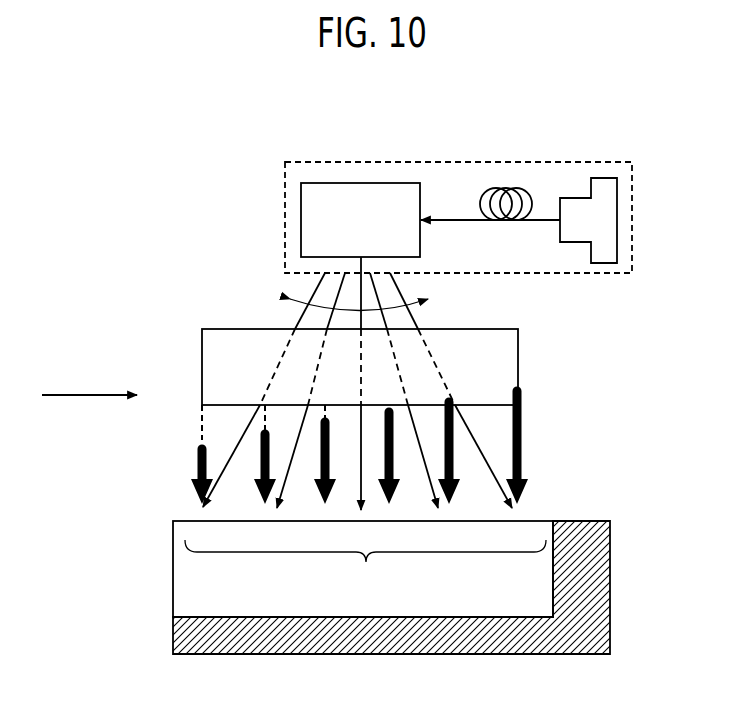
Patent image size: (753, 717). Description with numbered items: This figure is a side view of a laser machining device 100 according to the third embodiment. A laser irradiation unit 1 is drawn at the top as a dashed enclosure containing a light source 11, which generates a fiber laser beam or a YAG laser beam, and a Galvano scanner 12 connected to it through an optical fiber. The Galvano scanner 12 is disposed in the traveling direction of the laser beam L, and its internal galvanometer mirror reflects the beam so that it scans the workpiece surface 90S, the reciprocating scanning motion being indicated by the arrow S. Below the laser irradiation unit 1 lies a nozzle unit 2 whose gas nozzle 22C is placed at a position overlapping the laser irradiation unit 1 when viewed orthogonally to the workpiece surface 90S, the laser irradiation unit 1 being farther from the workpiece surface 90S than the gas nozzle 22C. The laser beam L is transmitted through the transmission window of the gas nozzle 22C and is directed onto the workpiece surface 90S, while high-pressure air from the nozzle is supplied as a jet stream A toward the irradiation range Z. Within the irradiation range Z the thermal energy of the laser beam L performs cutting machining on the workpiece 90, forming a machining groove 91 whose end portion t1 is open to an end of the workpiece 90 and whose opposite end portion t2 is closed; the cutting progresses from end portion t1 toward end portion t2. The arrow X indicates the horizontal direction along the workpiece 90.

The laser processing apparatus 100 is at (446, 111).
The laser irradiation unit 1 is at (618, 161).
The light source 11 is at (614, 224).
The Galvano scanner 12 is at (348, 194).
The nozzle unit 2 is at (143, 284).
The gas nozzle 22C is at (242, 343).
The arrow S is at (374, 304).
The laser beam L is at (441, 373).
The jet stream A is at (197, 453).
The X direction X is at (77, 396).
The workpiece 90 is at (614, 580).
The workpiece surface 90S is at (595, 521).
The machining groove 91 is at (258, 606).
The irradiation range Z is at (365, 569).
The end portion t1 is at (173, 617).
The end portion t2 is at (553, 601).